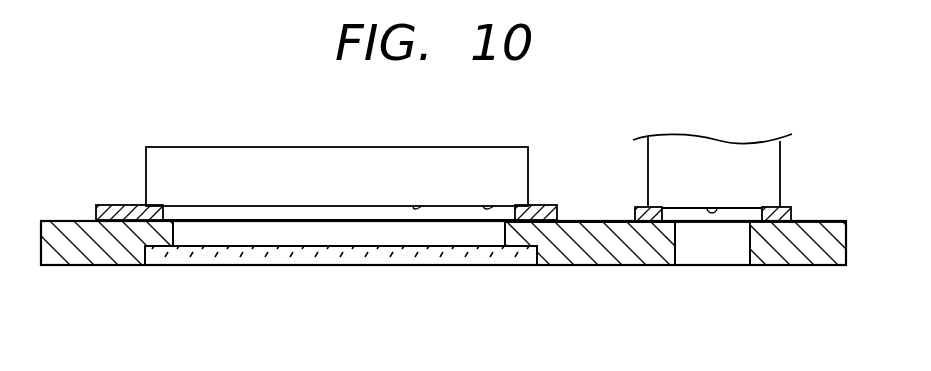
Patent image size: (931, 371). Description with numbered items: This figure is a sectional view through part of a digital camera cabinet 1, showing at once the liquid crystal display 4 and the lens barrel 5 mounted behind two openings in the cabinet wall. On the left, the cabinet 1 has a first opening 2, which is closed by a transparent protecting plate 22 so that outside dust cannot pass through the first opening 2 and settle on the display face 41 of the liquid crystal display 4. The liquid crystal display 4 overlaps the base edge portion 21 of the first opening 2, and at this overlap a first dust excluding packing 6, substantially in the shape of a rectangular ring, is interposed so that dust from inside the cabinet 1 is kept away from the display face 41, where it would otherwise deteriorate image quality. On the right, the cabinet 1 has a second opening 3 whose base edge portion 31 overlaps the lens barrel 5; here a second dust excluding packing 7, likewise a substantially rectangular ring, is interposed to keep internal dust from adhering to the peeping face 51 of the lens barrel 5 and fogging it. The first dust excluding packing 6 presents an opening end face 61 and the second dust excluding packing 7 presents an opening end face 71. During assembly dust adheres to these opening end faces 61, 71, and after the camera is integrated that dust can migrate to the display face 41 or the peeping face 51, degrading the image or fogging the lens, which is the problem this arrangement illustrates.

The cabinet 1 is at (74, 266).
The first opening 2 is at (267, 237).
The base edge portion 21 is at (522, 240).
The transparent protecting plate 22 is at (399, 258).
The second opening 3 is at (708, 253).
The base edge portion 31 is at (776, 253).
The liquid crystal display 4 is at (190, 147).
The display face 41 is at (408, 207).
The lens barrel 5 is at (768, 160).
The peeping face 51 is at (712, 203).
The first dust excluding packing 6 is at (546, 205).
The opening end face 61 is at (482, 207).
The second dust excluding packing 7 is at (784, 207).
The opening end face 71 is at (681, 210).